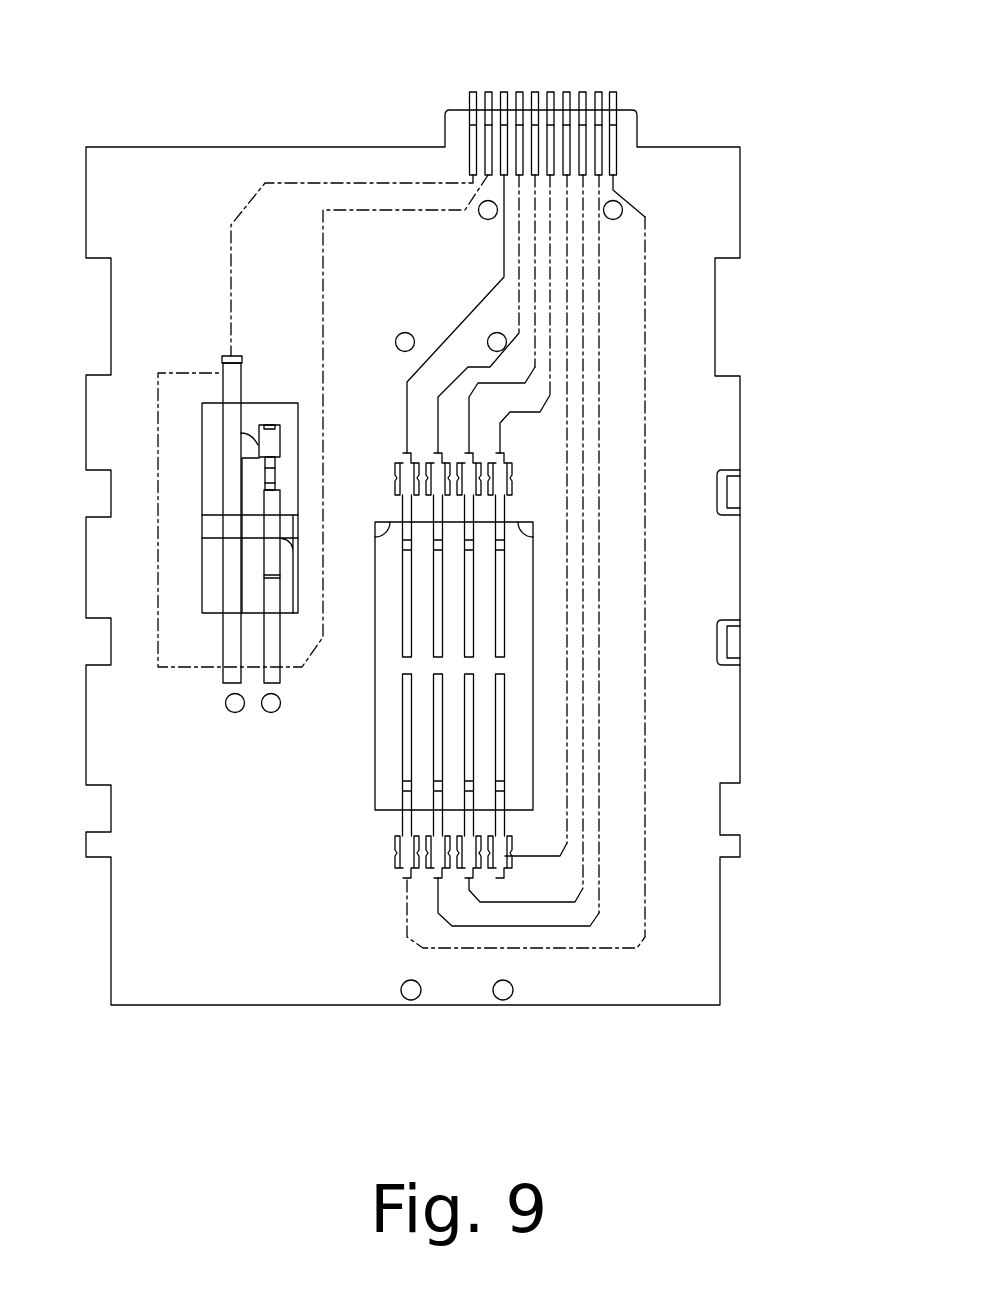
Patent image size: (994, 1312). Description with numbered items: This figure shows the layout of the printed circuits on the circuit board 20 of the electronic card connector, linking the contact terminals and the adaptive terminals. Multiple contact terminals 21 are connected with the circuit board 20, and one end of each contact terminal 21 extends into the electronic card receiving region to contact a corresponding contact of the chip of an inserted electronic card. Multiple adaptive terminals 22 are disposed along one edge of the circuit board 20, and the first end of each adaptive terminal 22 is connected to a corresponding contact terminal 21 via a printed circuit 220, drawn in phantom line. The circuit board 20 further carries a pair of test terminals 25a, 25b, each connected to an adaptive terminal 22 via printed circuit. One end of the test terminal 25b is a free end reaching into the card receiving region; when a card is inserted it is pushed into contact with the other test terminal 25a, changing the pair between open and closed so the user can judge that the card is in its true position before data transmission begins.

The circuit board 20 is at (266, 159).
The contact terminal 21 is at (498, 625).
The adaptive terminal 22 is at (471, 92).
The printed circuit 220 is at (230, 233).
The test terminal 25a is at (232, 437).
The test terminal 25b is at (268, 430).